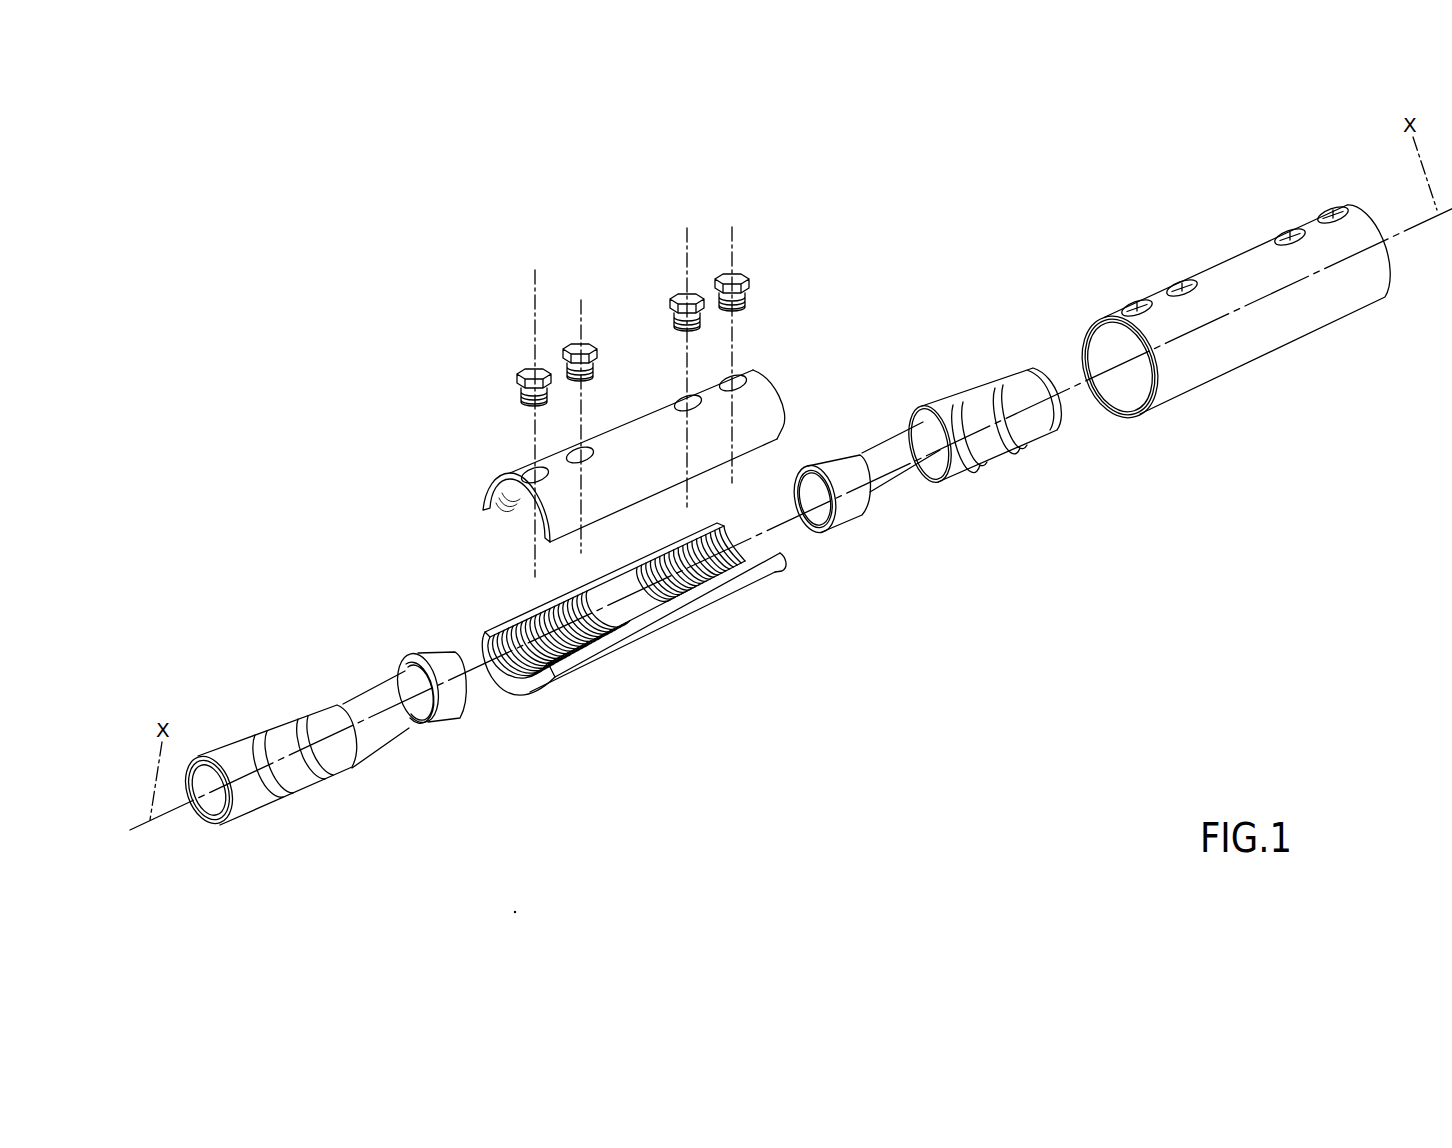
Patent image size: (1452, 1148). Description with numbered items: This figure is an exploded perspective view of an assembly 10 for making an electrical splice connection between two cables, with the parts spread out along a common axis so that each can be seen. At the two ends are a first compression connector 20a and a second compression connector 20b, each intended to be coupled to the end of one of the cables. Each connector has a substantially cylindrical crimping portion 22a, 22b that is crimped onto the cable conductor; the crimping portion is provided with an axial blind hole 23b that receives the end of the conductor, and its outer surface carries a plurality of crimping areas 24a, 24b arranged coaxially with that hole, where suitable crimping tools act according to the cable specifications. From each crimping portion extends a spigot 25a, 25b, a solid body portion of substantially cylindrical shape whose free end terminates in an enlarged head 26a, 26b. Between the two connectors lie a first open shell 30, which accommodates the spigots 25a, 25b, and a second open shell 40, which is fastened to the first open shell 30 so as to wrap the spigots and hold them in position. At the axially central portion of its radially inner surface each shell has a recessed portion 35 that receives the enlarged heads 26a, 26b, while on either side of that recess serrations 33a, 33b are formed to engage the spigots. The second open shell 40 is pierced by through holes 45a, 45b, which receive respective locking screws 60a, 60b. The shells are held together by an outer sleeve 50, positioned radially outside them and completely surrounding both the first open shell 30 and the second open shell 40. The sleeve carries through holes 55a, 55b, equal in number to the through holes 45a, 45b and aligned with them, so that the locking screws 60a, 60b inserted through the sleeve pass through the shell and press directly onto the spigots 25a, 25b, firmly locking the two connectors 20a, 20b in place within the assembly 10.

The assembly 10 is at (493, 262).
The first compression connector 20a is at (918, 350).
The second compression connector 20b is at (268, 668).
The crimping portion 22a is at (978, 388).
The crimping portion 22b is at (230, 722).
The axial blind hole 23b is at (220, 800).
The crimping area 24a is at (1053, 422).
The crimping area 24b is at (330, 757).
The spigot 25a is at (866, 441).
The spigot 25b is at (353, 688).
The enlarged head 26a is at (855, 505).
The enlarged head 26b is at (448, 700).
The first open shell 30 is at (685, 648).
The serrations 33a is at (718, 575).
The serrations 33b is at (558, 645).
The recessed portion 35 is at (621, 609).
The second open shell 40 is at (647, 393).
The through hole 45a is at (735, 379).
The through hole 45b is at (533, 468).
The outer sleeve 50 is at (1200, 240).
The through hole 55a is at (1333, 212).
The through hole 55b is at (1182, 286).
The locking screw 60a is at (730, 273).
The locking screw 60b is at (573, 343).